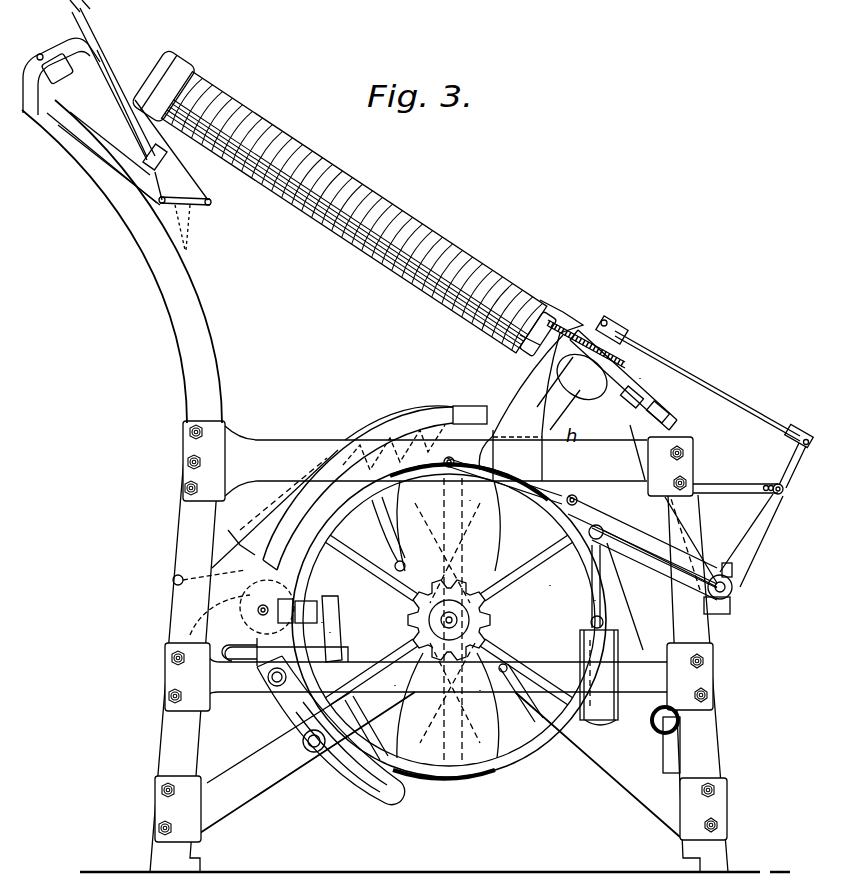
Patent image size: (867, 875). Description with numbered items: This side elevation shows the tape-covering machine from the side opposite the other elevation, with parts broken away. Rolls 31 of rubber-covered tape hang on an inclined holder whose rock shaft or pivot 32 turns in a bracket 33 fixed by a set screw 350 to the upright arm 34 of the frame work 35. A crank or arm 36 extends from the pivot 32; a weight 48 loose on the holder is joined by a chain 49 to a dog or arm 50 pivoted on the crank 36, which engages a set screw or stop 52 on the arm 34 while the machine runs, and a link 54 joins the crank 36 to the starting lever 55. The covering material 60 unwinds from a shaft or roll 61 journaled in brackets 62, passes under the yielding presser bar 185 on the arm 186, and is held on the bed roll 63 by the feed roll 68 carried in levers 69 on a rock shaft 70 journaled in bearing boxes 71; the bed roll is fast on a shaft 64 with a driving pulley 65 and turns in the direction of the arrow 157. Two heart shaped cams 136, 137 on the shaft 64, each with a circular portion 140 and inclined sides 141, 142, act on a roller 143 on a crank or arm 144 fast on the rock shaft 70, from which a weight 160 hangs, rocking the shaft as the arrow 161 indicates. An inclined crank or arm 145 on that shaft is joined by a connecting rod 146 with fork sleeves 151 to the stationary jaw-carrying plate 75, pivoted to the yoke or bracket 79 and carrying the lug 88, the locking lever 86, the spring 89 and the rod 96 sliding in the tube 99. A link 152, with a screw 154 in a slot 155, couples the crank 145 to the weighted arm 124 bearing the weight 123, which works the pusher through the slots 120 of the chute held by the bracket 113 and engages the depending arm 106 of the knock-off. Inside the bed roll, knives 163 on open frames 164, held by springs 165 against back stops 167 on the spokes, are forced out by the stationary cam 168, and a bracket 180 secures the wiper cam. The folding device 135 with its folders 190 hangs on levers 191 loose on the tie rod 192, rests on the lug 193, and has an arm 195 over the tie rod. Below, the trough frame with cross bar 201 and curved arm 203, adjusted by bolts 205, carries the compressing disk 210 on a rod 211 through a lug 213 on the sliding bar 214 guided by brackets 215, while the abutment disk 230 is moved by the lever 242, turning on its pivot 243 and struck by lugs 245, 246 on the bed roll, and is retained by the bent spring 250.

The rolls 31 is at (305, 210).
The rock shaft or pivot 32 is at (57, 140).
The bracket 33 is at (70, 12).
The upright arm 34 is at (160, 262).
The frame work 35 is at (185, 520).
The crank or arm 36 is at (88, 165).
The weight 48 is at (175, 63).
The chain 49 is at (190, 228).
The dog or arm 50 is at (130, 180).
The set screw or stop 52 is at (104, 192).
The link 54 is at (195, 185).
The lever 55 is at (92, 27).
The covering material 60 is at (620, 660).
The shaft or roll 61 is at (680, 735).
The brackets 62 is at (680, 752).
The bed roll 63 is at (360, 730).
The shaft 64 is at (490, 617).
The driving pulley 65 is at (505, 609).
The feed roll 68 is at (578, 495).
The levers 69 is at (620, 522).
The rock shaft 70 is at (712, 590).
The bearing boxes 71 is at (720, 615).
The stationary plate 75 is at (620, 360).
The yoke or bracket 79 is at (530, 370).
The lever 86 is at (655, 395).
The lug or projection 88 is at (665, 405).
The spring 89 is at (585, 327).
The rod 96 is at (640, 378).
The tube 99 is at (520, 335).
The depending arm 106 is at (655, 440).
The arm or bracket 113 is at (590, 440).
The slots 120 is at (545, 410).
The weight 123 is at (580, 390).
The weighted arm 124 is at (630, 440).
The folding device 135 is at (400, 420).
The heart shaped cam 136 is at (503, 526).
The heart shaped cam 137 is at (397, 682).
The circular portion 140 is at (435, 477).
The inclined side portion 141 is at (498, 558).
The inclined side portion 142 is at (432, 502).
The roller 143 is at (490, 457).
The crank or arm 144 is at (640, 570).
The inclined crank or arm 145 is at (760, 535).
The connecting rod 146 is at (710, 390).
The fork sleeve 151 is at (615, 333).
The link 152 is at (730, 484).
The screw 154 is at (780, 492).
The slot 155 is at (783, 478).
The arrow 157 is at (550, 585).
The weight 160 is at (607, 718).
The arrow 161 is at (740, 585).
The knife 163 is at (374, 541).
The open frame 164 is at (450, 467).
The spring 165 is at (483, 689).
The back stop 167 is at (405, 617).
The stationary bar or cam 168 is at (470, 497).
The bracket 180 is at (595, 735).
The yielding presser bar 185 is at (615, 585).
The arm 186 is at (633, 535).
The lugs or projections 190 is at (415, 408).
The levers or arms 191 is at (268, 510).
The tie rod 192 is at (175, 580).
The lug or projection 193 is at (462, 415).
The arm 195 is at (235, 535).
The cross bar 201 is at (238, 645).
The depending curved arm 203 is at (275, 705).
The screws or bolts 205 is at (310, 742).
The compressing disk 210 is at (245, 590).
The rod 211 is at (285, 597).
The lug or arm 213 is at (255, 610).
The bar 214 is at (312, 598).
The brackets 215 is at (330, 632).
The abutment disk 230 is at (190, 630).
The lever 242 is at (320, 645).
The pivot 243 is at (320, 605).
The lug or projection 245 is at (405, 480).
The lug or projection 246 is at (322, 622).
The bent spring 250 is at (270, 675).
The set screw 350 is at (42, 58).